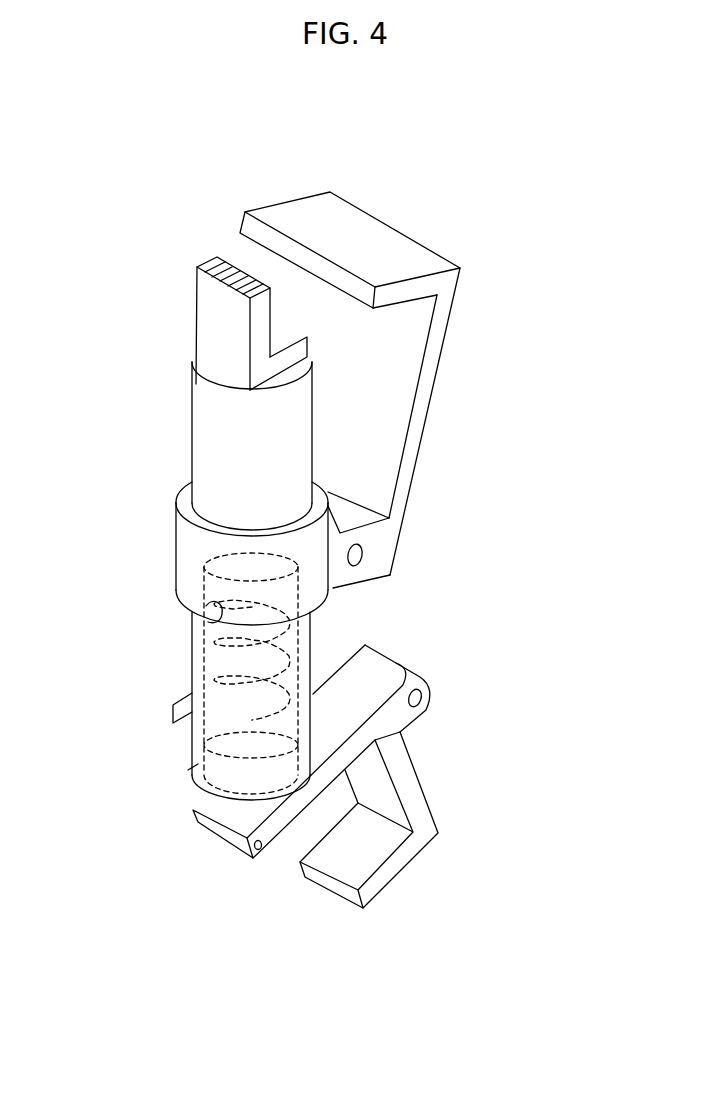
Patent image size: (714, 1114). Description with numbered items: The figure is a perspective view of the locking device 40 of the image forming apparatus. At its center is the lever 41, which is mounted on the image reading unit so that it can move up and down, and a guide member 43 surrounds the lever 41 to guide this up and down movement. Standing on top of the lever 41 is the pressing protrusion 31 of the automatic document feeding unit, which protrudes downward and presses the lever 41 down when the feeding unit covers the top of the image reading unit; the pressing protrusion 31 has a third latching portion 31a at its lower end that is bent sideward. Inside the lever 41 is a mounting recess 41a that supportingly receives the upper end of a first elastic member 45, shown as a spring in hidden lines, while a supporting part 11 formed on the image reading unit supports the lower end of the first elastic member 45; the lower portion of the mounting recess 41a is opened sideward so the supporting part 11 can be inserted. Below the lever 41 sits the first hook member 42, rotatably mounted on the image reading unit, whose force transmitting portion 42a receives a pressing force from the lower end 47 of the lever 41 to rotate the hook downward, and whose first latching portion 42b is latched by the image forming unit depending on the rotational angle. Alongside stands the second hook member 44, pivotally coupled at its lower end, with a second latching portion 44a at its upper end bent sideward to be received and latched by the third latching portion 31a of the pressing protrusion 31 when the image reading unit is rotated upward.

The locking device 40 is at (149, 303).
The second latching portion 44a is at (342, 228).
The second hook member 44 is at (428, 400).
The pressing protrusion 31 is at (210, 345).
The third latching portion 31a is at (283, 332).
The lever 41 is at (212, 428).
The guide member 43 is at (210, 546).
The mounting recess 41a is at (218, 626).
The first elastic member 45 is at (205, 650).
The supporting part 11 is at (173, 717).
The lower end of the lever 47 is at (191, 776).
The first hook member 42 is at (410, 783).
The force transmitting portion 42a is at (198, 820).
The first latching portion 42b is at (382, 882).